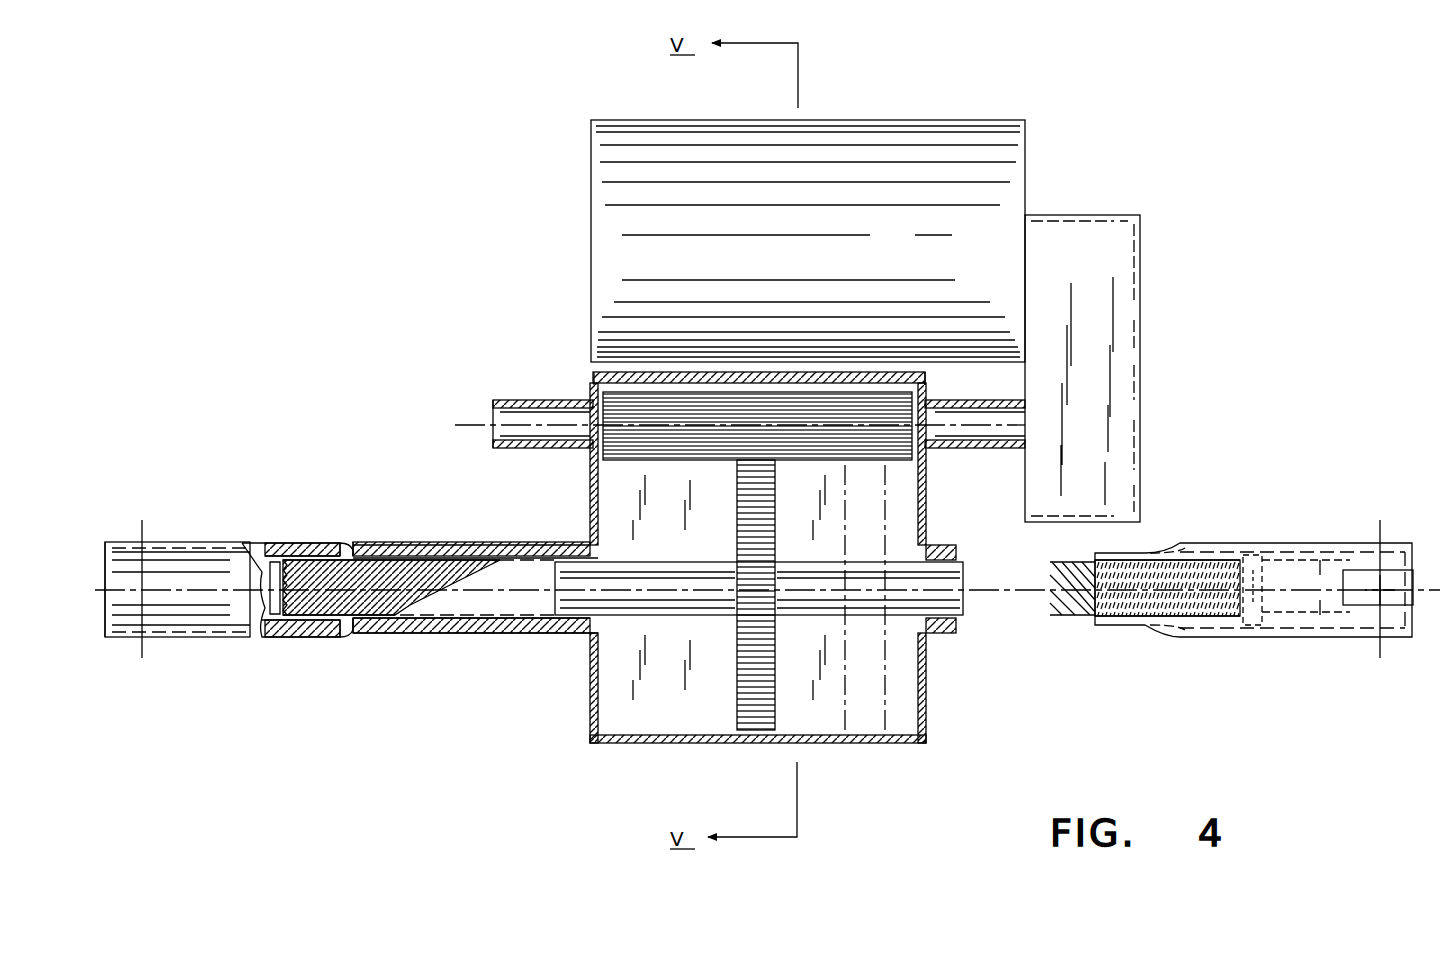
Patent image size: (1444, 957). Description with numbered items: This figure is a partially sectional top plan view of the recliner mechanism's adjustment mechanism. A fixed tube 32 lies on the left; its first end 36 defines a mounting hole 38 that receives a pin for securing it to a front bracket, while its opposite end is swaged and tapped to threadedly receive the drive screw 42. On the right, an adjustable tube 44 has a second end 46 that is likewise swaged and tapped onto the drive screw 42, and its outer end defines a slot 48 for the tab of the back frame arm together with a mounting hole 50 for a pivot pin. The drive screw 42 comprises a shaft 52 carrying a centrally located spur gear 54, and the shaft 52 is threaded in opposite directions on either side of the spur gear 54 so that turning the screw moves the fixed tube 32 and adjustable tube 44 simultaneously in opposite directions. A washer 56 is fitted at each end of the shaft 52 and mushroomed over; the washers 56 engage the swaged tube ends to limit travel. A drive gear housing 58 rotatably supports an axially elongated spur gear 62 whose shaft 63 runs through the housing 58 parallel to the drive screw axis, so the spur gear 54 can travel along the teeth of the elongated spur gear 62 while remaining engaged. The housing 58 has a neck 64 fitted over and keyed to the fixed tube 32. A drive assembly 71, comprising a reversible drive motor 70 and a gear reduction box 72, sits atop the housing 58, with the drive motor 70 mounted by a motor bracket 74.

The fixed tube 32 is at (213, 542).
The first end 36 is at (108, 640).
The mounting hole 38 is at (142, 542).
The drive screw 42 is at (737, 692).
The adjustable tube 44 is at (1213, 637).
The second end 46 is at (1108, 625).
The slot 48 is at (1358, 575).
The mounting hole 50 is at (1385, 545).
The shaft 52 is at (638, 622).
The spur gear 54 is at (778, 678).
The washer 56 is at (277, 545).
The drive gear housing 58 is at (922, 722).
The elongated spur gear 62 is at (642, 462).
The shaft 63 is at (530, 400).
The neck 64 is at (455, 545).
The drive motor 70 is at (1028, 150).
The drive assembly 71 is at (1148, 122).
The gear reduction box 72 is at (1140, 260).
The motor bracket 74 is at (633, 372).